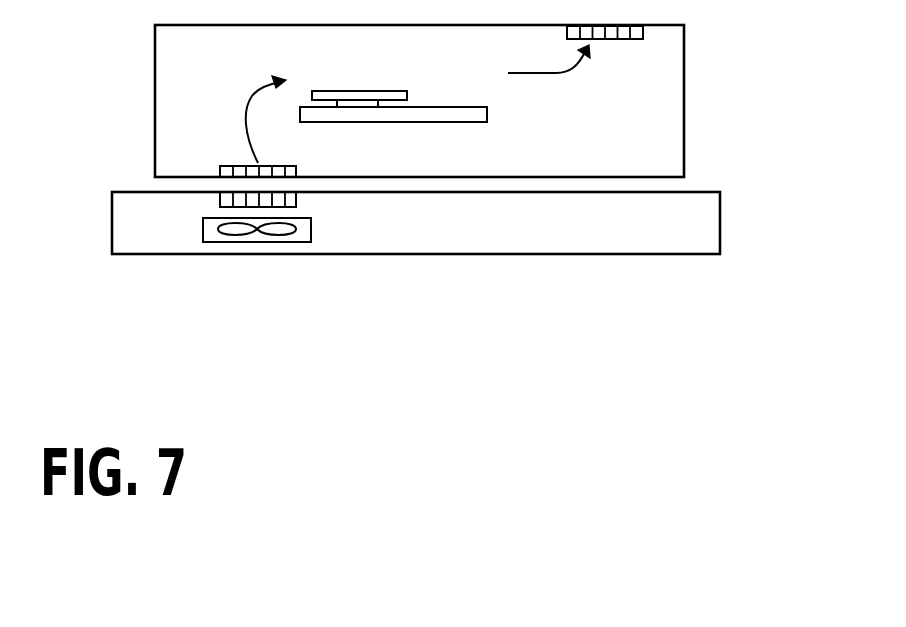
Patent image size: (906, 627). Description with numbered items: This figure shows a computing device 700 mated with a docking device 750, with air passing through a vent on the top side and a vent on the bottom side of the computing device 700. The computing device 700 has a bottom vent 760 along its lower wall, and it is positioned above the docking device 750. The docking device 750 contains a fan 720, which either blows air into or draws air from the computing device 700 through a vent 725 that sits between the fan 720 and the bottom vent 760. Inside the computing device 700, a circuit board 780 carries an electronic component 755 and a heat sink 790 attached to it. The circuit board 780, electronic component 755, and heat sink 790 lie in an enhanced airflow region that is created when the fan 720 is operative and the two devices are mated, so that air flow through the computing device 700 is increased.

The computing device 700 is at (744, 109).
The fan 720 is at (311, 229).
The vent 725 is at (296, 198).
The docking device 750 is at (416, 225).
The integrated circuit chip 755 is at (374, 106).
The bottom vent 760 is at (297, 172).
The circuit board 780 is at (487, 111).
The heat sink 790 is at (398, 91).